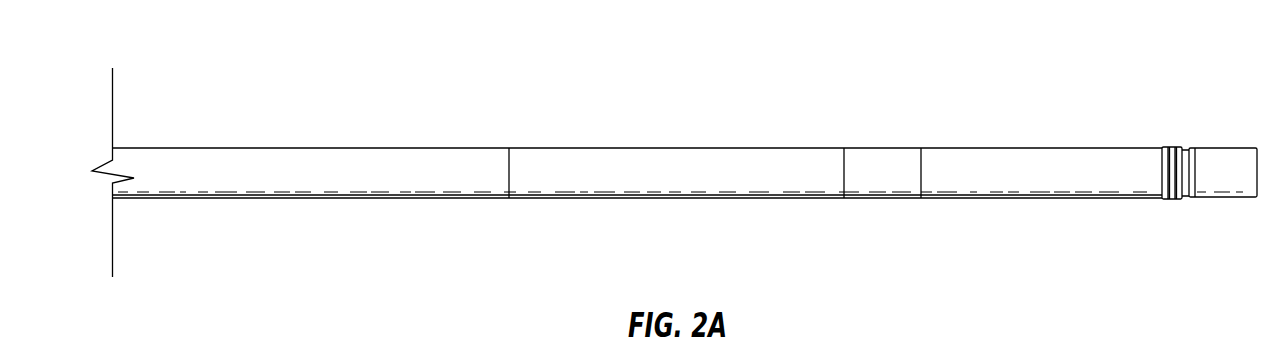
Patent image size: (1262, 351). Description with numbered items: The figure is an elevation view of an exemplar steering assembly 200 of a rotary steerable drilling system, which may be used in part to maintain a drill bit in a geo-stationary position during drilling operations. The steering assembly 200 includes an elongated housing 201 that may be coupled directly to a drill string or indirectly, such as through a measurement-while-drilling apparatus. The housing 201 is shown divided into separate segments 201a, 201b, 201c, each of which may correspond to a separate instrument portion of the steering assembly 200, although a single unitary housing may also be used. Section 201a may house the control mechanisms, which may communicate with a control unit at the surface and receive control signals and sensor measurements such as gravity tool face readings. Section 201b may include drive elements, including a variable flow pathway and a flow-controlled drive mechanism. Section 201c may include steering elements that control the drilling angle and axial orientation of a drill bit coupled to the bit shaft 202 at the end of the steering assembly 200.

The steering assembly 200 is at (158, 52).
The housing 201 is at (678, 169).
The section 201a is at (241, 203).
The section 201b is at (697, 202).
The section 201c is at (1027, 202).
The bit shaft 202 is at (1219, 158).